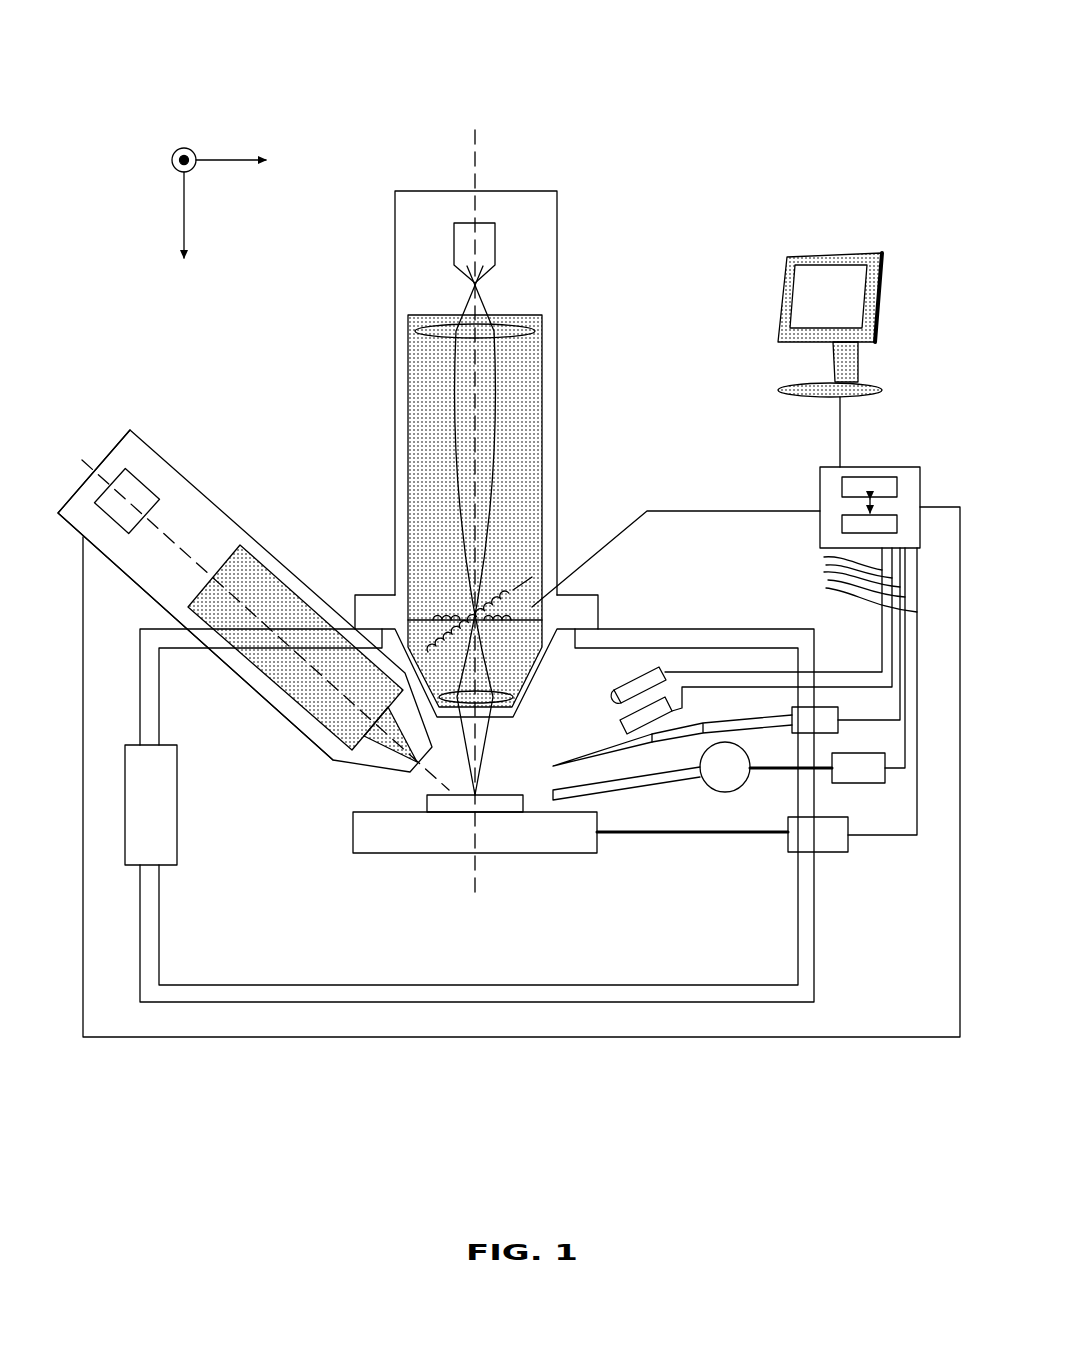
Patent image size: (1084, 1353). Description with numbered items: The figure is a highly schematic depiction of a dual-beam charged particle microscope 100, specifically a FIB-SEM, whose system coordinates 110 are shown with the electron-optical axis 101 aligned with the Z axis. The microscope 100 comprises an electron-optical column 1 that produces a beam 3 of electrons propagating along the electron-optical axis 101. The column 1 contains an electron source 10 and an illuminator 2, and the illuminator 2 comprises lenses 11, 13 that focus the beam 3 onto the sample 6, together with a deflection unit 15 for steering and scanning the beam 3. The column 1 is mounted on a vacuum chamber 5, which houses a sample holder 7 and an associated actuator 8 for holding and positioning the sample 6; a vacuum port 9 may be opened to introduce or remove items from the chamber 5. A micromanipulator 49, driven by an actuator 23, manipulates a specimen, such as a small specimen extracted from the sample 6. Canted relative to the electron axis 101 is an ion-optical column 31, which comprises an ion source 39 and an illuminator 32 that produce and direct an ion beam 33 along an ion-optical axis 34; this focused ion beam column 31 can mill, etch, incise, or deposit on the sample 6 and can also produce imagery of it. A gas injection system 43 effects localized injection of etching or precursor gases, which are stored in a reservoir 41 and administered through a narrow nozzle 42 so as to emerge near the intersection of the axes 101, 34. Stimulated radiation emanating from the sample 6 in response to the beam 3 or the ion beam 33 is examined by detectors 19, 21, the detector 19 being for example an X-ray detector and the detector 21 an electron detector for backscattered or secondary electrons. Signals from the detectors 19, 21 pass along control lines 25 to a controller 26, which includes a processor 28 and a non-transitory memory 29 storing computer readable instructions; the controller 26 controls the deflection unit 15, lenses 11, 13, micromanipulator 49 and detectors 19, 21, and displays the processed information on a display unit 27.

The microscope 100 is at (326, 58).
The system coordinates 110 is at (134, 160).
The electron-optical column 1 is at (349, 300).
The electron-optical axis 101 is at (475, 142).
The illuminator 2 is at (430, 426).
The beam 3 is at (487, 378).
The vacuum chamber 5 is at (148, 930).
The sample 6 is at (495, 803).
The sample holder 7 is at (447, 856).
The actuator 8 is at (810, 828).
The vacuum port 9 is at (170, 840).
The electron source 10 is at (475, 243).
The lens 11 is at (523, 331).
The lens 13 is at (497, 700).
The deflection unit 15 is at (513, 588).
The detector 19 is at (643, 681).
The detector 21 is at (673, 714).
The actuator 23 is at (828, 720).
The control lines 25 is at (757, 511).
The controller 26 is at (917, 467).
The display unit 27 is at (838, 305).
The processor 28 is at (845, 487).
The non-transitory memory 29 is at (842, 522).
The ion-optical column 31 is at (213, 665).
The illuminator 32 is at (278, 608).
The ion beam 33 is at (373, 728).
The ion-optical axis 34 is at (92, 470).
The ion source 39 is at (130, 482).
The reservoir 41 is at (845, 773).
The nozzle 42 is at (668, 780).
The gas injection system 43 is at (735, 762).
The micromanipulator 49 is at (605, 753).